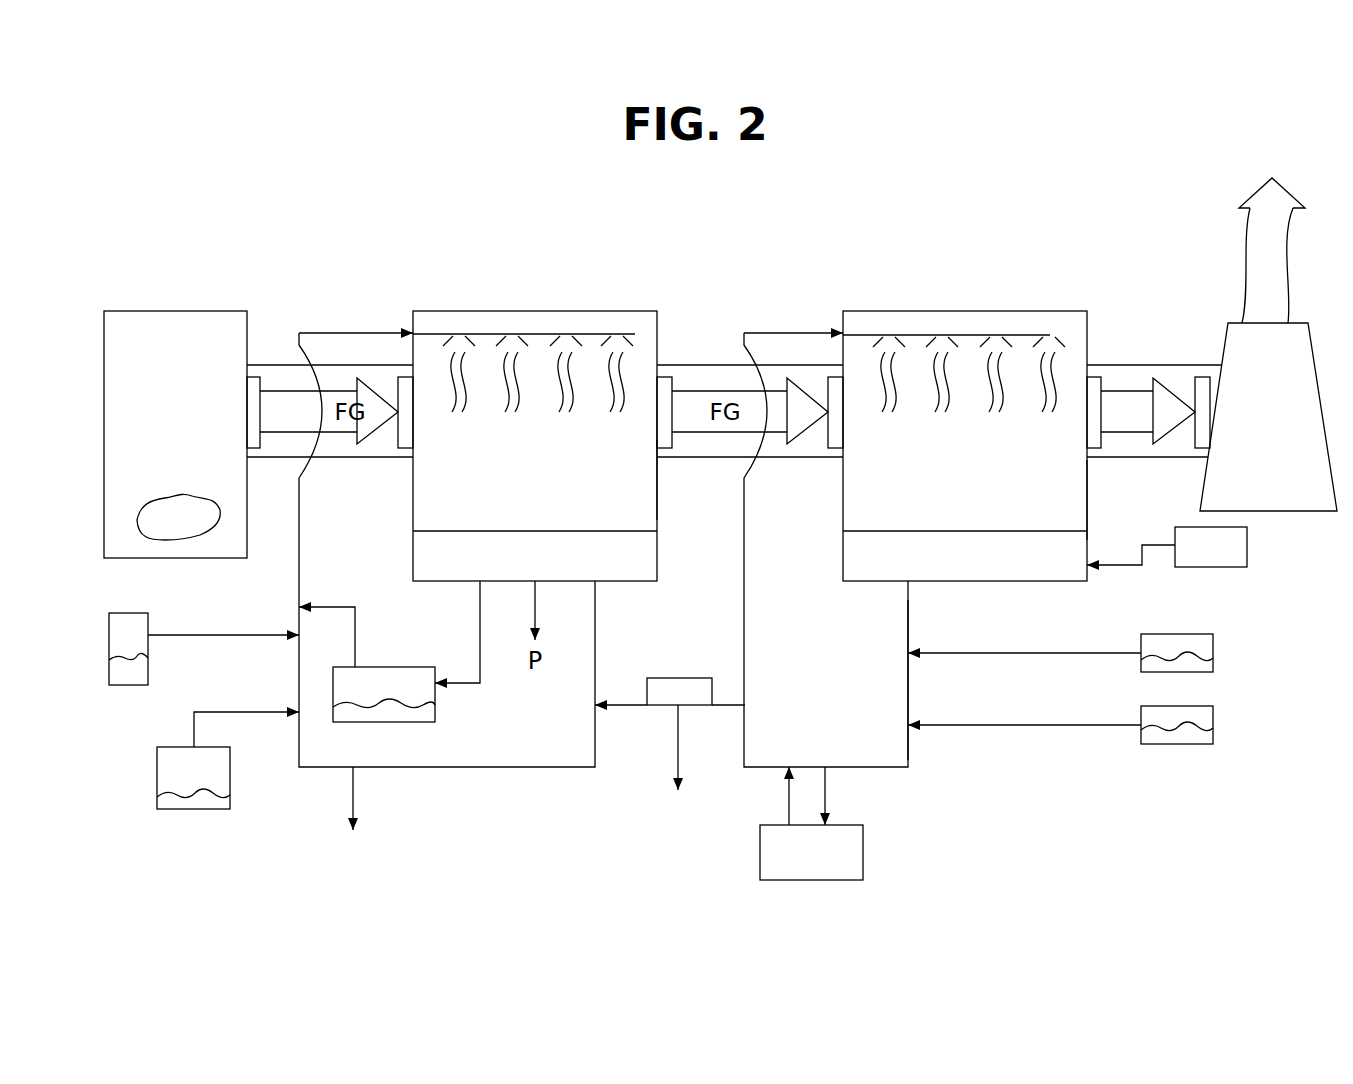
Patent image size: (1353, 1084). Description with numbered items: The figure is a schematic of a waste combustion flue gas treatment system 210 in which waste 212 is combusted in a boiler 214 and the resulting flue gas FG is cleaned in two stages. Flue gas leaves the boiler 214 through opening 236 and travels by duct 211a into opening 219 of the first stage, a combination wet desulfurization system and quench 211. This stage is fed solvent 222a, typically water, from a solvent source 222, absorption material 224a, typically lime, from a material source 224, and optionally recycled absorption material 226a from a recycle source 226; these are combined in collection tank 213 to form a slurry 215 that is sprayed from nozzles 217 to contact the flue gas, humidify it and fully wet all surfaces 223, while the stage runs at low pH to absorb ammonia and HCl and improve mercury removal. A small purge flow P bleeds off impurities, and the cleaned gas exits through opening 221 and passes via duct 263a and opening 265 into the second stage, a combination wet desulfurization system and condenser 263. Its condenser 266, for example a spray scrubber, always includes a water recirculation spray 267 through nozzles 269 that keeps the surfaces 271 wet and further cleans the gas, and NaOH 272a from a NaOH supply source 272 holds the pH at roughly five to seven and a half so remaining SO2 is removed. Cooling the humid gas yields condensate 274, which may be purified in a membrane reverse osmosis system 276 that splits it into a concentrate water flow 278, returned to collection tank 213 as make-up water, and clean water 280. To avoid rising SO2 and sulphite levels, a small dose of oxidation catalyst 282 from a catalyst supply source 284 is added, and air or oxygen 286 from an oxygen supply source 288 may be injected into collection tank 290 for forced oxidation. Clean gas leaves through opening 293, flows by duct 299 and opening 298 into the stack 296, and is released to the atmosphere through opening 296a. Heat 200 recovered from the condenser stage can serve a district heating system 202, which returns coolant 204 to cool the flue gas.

The waste combustion flue gas treatment system 210 is at (777, 238).
The boiler 214 is at (193, 322).
The waste 212 is at (190, 523).
The opening 236 is at (257, 377).
The opening 219 is at (398, 380).
The duct 211a is at (320, 362).
The combination wet desulfurization system and quench 211 is at (510, 308).
The nozzles 217 is at (462, 333).
The slurry 215 is at (627, 377).
The surfaces 223 is at (657, 480).
The collection tank 213 is at (633, 557).
The opening 221 is at (673, 377).
The duct 263a is at (718, 362).
The opening 265 is at (828, 383).
The combination wet desulfurization system and condenser 263 is at (928, 312).
The condenser 266 is at (1027, 335).
The nozzles 269 is at (890, 335).
The water recirculation spray 267 is at (1057, 388).
The surfaces 271 is at (1070, 477).
The collection tank 290 is at (870, 568).
The opening 293 is at (1103, 380).
The duct 299 is at (1137, 458).
The opening 298 is at (1207, 472).
The stack 296 is at (1223, 342).
The opening 296a is at (1240, 317).
The oxygen supply source 288 is at (1247, 532).
The air and/or oxygen 286 is at (1230, 553).
The material source 224 is at (130, 623).
The absorption material 224a is at (128, 675).
The solvent source 222 is at (160, 763).
The solvent 222a is at (205, 805).
The recycle source 226 is at (375, 680).
The recycled absorption material 226a is at (393, 712).
The membrane reverse osmosis system 276 is at (683, 678).
The concentrate water flow 278 is at (632, 708).
The clean water 280 is at (678, 757).
The condensate 274 is at (908, 688).
The NaOH supply source 272 is at (1205, 634).
The NaOH 272a is at (1200, 665).
The oxidation catalyst 282 is at (1195, 715).
The catalyst supply source 284 is at (1174, 740).
The district heating system 202 is at (865, 850).
The coolant 204 is at (789, 800).
The heat 200 is at (826, 785).